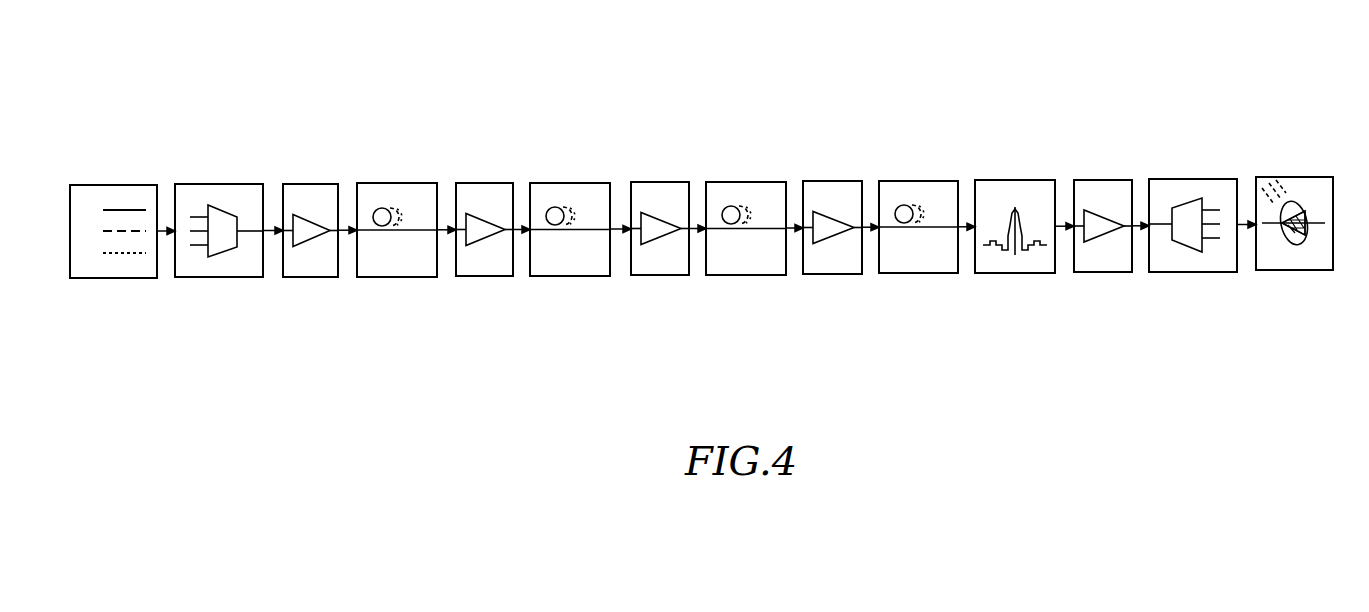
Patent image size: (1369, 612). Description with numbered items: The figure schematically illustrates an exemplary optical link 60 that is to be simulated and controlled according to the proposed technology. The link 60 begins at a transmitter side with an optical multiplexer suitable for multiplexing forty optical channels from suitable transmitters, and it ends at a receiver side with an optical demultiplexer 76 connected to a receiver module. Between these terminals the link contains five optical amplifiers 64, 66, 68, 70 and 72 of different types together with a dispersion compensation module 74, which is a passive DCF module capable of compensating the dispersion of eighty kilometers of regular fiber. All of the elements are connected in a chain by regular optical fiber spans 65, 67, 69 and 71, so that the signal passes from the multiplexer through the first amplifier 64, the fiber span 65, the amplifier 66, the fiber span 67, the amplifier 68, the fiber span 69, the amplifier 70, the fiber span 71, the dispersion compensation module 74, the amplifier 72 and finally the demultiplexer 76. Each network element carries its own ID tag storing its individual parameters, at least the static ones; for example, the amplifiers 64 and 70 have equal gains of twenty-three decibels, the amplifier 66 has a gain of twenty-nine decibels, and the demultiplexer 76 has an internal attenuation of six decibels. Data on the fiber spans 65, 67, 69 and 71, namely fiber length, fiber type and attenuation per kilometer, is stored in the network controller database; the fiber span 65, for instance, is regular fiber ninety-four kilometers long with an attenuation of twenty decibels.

The optical link 60 is at (1236, 90).
The optical amplifier 64 is at (303, 184).
The optical fiber span 65 is at (390, 183).
The optical amplifier 66 is at (478, 183).
The optical fiber span 67 is at (563, 183).
The optical amplifier 68 is at (651, 182).
The optical fiber span 69 is at (738, 182).
The optical amplifier 70 is at (826, 181).
The optical fiber span 71 is at (911, 181).
The optical amplifier 72 is at (1095, 180).
The dispersion compensation module 74 is at (1008, 180).
The optical demultiplexer 76 is at (1185, 179).